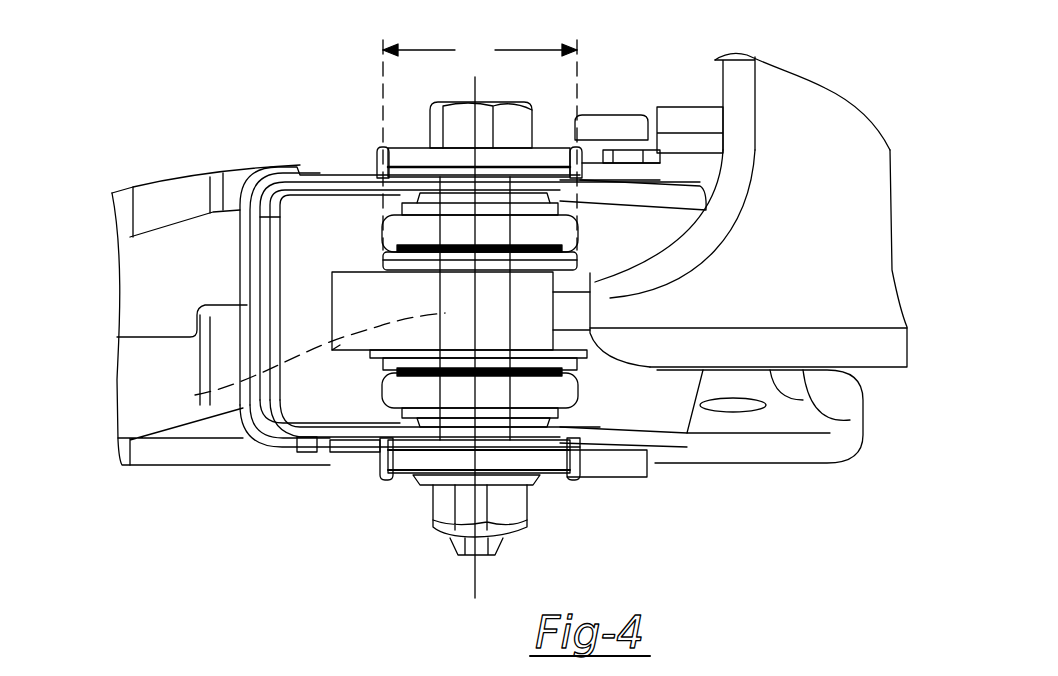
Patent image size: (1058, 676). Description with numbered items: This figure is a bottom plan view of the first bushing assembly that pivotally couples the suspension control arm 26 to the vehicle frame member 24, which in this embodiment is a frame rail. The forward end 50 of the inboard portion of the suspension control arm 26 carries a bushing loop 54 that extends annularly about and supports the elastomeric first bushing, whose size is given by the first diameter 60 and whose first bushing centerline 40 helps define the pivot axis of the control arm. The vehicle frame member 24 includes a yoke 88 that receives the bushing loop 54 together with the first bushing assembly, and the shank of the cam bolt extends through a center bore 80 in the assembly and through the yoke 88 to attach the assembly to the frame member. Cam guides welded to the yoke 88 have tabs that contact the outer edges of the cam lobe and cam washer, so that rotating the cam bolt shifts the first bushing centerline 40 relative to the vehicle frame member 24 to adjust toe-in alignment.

The vehicle frame member 24 is at (153, 264).
The suspension control arm 26 is at (893, 145).
The first bushing centerline 40 is at (475, 585).
The forward end 50 is at (685, 318).
The bushing loop 54 is at (352, 315).
The first diameter 60 is at (480, 143).
The center bore 80 is at (190, 396).
The yoke 88 is at (603, 188).